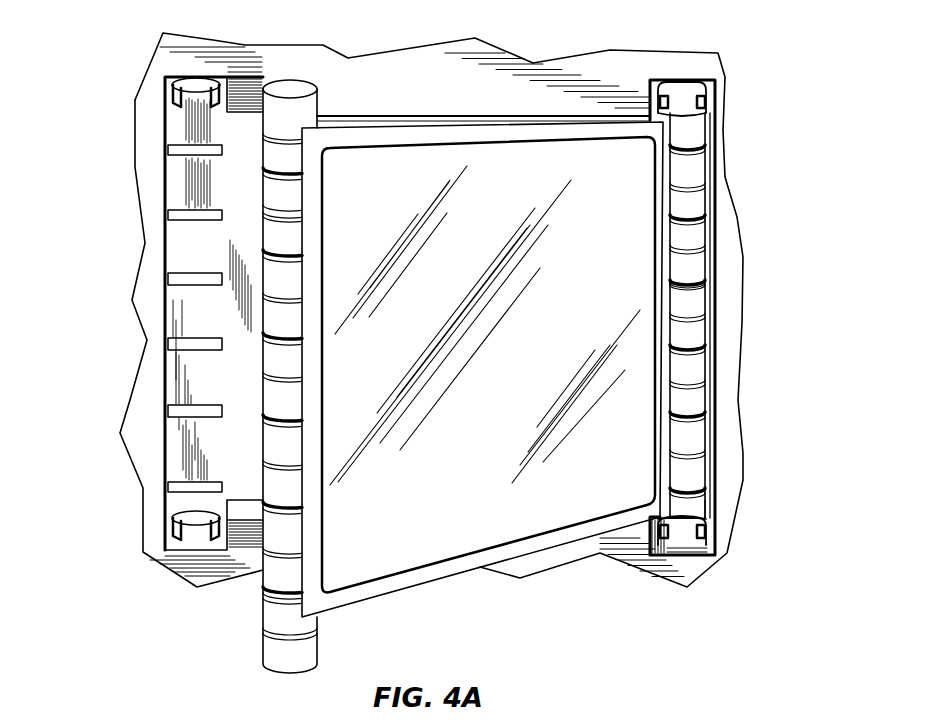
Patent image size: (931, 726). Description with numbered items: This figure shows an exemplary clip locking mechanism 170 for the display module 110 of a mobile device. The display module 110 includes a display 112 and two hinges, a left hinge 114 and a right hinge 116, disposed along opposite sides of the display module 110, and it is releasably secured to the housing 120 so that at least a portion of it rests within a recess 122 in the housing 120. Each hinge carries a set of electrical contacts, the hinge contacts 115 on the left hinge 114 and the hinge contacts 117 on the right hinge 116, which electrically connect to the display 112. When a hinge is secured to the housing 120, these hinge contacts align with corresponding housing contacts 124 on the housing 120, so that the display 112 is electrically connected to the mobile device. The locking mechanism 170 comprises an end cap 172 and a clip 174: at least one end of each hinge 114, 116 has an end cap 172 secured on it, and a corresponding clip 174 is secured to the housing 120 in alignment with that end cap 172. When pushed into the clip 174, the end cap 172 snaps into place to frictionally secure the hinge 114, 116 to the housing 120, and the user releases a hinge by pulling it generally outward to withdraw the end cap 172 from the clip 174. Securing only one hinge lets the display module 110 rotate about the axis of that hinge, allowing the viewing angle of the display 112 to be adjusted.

The display module 110 is at (427, 585).
The display 112 is at (540, 344).
The left hinge 114 is at (290, 203).
The hinge contacts 115 is at (265, 597).
The right hinge 116 is at (697, 193).
The hinge contacts 117 is at (700, 275).
The housing 120 is at (558, 560).
The recess 122 is at (230, 370).
The housing contacts 124 is at (188, 280).
The locking mechanism 170 is at (722, 508).
The end cap 172 is at (297, 108).
The clip 174 is at (177, 98).